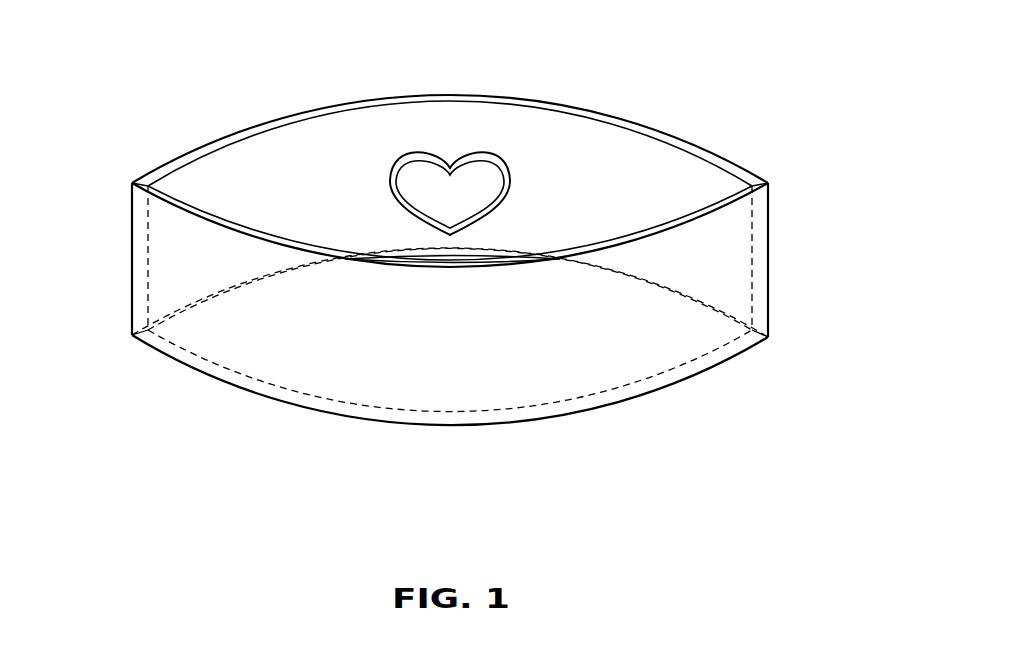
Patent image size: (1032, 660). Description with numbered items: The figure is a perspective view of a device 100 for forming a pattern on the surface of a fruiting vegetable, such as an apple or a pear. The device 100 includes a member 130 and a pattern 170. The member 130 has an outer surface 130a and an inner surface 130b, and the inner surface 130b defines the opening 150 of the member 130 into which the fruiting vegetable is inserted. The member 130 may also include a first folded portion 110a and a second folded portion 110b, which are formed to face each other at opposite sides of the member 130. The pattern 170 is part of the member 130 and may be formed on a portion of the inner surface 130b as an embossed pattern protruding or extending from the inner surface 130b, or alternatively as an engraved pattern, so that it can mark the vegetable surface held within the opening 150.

The device for forming a pattern on a surface of a fruiting vegetable 100 is at (450, 256).
The first folded portion 110a is at (132, 252).
The second folded portion 110b is at (768, 253).
The member 130 is at (450, 256).
The outer surface 130a is at (583, 368).
The inner surface 130b is at (342, 138).
The opening 150 is at (249, 191).
The pattern 170 is at (487, 148).